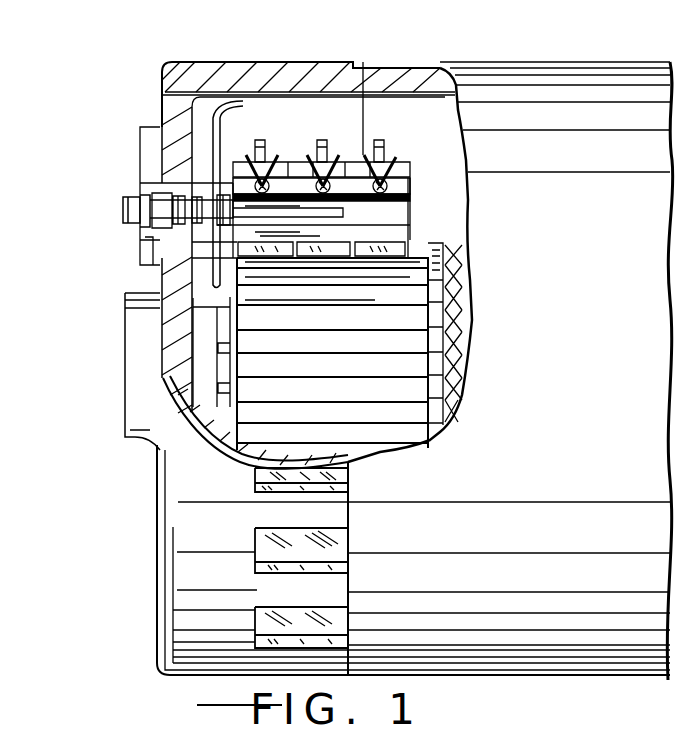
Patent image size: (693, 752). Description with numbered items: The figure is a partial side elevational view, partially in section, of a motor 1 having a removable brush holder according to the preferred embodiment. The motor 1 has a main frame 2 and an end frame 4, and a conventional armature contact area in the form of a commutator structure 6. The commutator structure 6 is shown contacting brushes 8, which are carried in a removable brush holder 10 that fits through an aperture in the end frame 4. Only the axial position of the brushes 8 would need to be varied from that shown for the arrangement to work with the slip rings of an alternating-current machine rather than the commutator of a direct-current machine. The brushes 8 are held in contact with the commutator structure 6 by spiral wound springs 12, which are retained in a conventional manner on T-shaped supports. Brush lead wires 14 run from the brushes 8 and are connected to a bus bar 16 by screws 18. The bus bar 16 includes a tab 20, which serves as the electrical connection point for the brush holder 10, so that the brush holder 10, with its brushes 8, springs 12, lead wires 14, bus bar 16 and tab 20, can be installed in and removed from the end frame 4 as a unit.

The motor 1 is at (440, 57).
The main frame 2 is at (563, 83).
The end frame 4 is at (237, 67).
The commutator structure 6 is at (392, 390).
The brushes 8 is at (410, 233).
The removable brush holder 10 is at (395, 141).
The spiral wound springs 12 is at (322, 140).
The brush lead wires 14 is at (243, 147).
The bus bar 16 is at (395, 183).
The screws 18 is at (408, 211).
The tab 20 is at (147, 200).